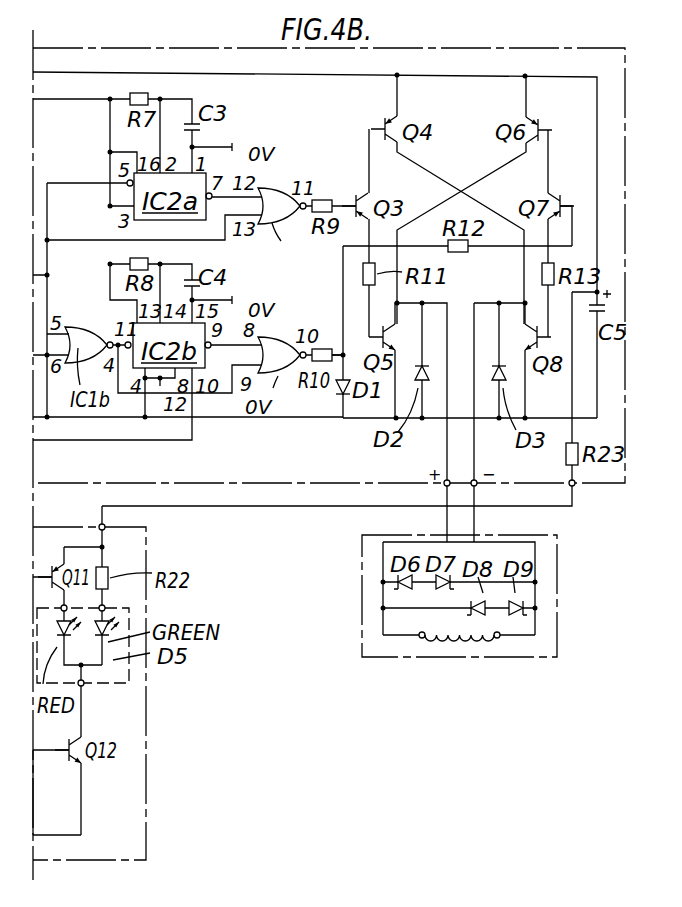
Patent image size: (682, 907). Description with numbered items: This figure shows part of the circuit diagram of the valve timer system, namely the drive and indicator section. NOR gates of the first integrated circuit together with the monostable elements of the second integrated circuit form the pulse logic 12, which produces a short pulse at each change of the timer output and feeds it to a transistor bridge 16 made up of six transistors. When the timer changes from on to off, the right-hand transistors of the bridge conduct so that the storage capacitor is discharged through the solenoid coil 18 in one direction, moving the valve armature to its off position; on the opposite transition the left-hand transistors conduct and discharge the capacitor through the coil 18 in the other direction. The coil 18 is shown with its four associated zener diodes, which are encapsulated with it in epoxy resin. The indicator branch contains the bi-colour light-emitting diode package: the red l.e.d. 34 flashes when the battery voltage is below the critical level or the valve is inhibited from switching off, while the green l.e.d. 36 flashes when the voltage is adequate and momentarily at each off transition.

The NOR gate inverter stages of integrated circuit IC1 12 is at (277, 315).
The transistor bridge drive circuit 16 is at (545, 121).
The solenoid coil 18 is at (466, 641).
The red light-emitting diode 34 is at (62, 633).
The green light-emitting diode 36 is at (108, 618).